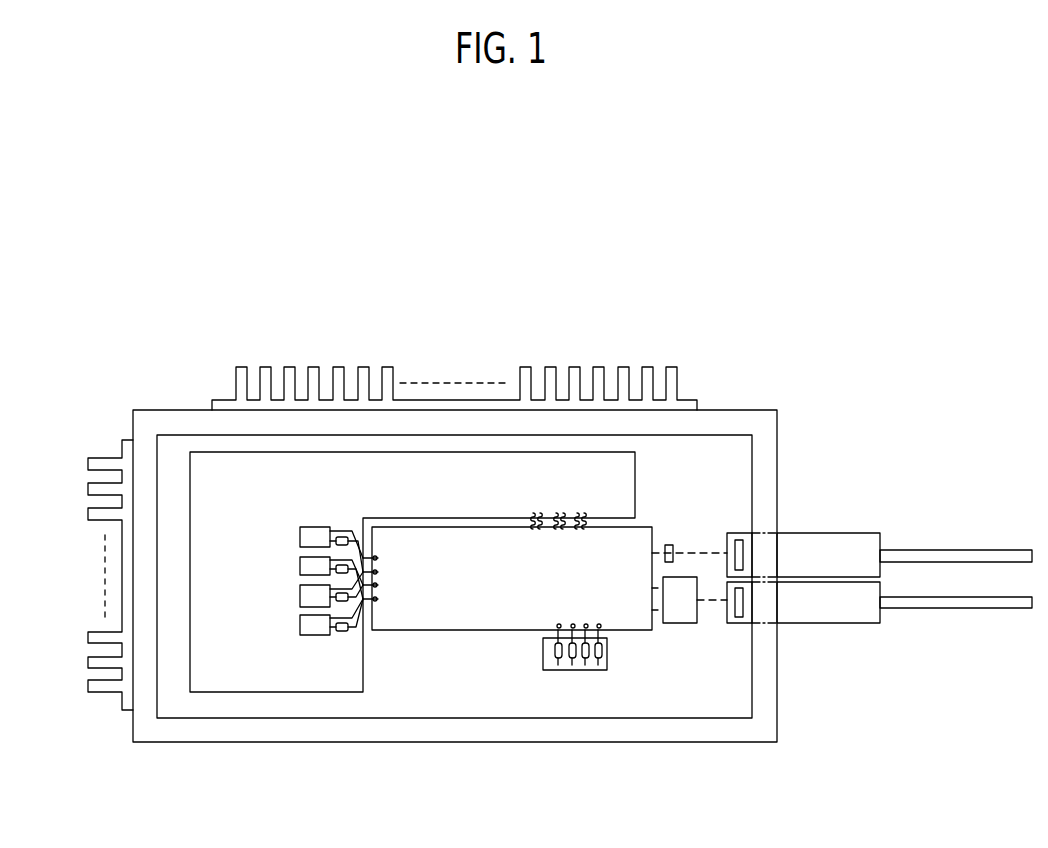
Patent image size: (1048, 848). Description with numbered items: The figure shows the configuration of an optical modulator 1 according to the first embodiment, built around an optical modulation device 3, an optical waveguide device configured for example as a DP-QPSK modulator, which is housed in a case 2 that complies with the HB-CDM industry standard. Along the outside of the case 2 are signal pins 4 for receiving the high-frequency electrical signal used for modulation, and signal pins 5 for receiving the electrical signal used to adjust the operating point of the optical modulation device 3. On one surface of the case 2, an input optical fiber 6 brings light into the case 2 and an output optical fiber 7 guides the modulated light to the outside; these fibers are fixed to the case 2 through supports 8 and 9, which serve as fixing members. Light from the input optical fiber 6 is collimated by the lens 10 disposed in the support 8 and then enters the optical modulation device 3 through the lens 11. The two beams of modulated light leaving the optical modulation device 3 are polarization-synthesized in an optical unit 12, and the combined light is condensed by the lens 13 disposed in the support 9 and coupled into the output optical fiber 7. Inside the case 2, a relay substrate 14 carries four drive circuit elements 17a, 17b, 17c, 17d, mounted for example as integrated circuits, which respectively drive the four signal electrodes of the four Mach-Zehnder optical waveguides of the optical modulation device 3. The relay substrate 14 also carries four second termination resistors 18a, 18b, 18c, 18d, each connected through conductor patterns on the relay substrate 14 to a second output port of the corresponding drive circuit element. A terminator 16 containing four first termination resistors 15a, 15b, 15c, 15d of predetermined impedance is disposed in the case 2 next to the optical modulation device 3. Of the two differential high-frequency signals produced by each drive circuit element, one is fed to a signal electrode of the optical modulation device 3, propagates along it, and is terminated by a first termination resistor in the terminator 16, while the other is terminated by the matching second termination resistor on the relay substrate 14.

The optical modulator 1 is at (84, 258).
The case 2 is at (171, 423).
The optical modulation device 3 is at (452, 631).
The signal pins 4 is at (75, 700).
The signal pins 5 is at (230, 353).
The input optical fiber 6 is at (960, 550).
The output optical fiber 7 is at (958, 608).
The support 8 is at (857, 535).
The support 9 is at (833, 602).
The lens 10 is at (742, 540).
The lens 11 is at (668, 545).
The optical unit 12 is at (680, 623).
The lens 13 is at (737, 620).
The relay substrate 14 is at (267, 683).
The first termination resistor 15a is at (557, 660).
The first termination resistor 15b is at (570, 662).
The first termination resistor 15c is at (584, 662).
The first termination resistor 15d is at (599, 660).
The terminator 16 is at (543, 657).
The drive circuit element 17a is at (300, 531).
The drive circuit element 17b is at (300, 561).
The drive circuit element 17c is at (300, 590).
The drive circuit element 17d is at (300, 621).
The second termination resistor 18a is at (338, 537).
The second termination resistor 18b is at (346, 565).
The second termination resistor 18c is at (346, 603).
The second termination resistor 18d is at (343, 632).